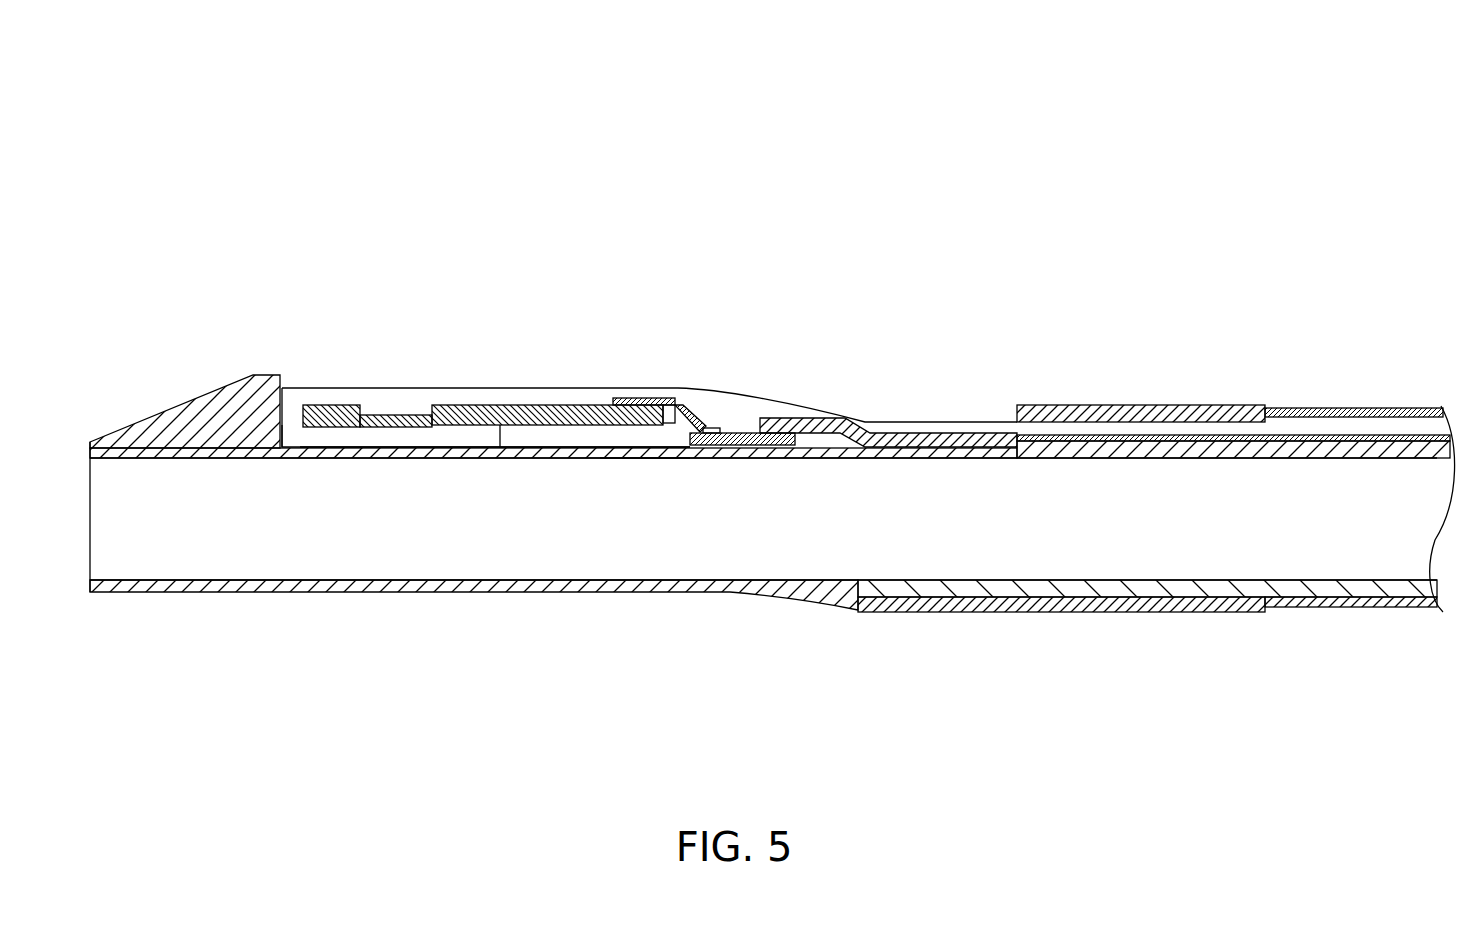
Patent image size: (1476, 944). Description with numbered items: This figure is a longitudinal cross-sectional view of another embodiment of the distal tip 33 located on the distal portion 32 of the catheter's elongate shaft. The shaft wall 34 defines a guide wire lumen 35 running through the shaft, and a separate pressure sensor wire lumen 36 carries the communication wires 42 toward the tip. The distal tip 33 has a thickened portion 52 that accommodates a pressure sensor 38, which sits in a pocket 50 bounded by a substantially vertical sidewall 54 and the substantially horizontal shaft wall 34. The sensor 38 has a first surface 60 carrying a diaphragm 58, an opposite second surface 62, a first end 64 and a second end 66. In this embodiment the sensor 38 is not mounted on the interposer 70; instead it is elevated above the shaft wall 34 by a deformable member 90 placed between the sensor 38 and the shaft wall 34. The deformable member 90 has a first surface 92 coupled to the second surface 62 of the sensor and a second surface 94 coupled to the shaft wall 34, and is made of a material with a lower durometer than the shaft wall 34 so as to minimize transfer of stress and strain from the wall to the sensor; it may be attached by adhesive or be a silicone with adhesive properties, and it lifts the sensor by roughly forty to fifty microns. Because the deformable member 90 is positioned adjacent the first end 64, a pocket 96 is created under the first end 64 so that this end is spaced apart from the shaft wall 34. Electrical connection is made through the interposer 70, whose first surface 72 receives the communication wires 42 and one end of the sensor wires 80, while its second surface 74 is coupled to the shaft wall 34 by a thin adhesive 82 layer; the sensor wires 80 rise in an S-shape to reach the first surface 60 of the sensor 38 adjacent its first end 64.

The distal portion 32 is at (1017, 733).
The distal tip 33 is at (385, 195).
The shaft wall 34 is at (402, 456).
The guide wire lumen 35 is at (923, 535).
The pressure sensor wire lumen 36 is at (1418, 408).
The pressure sensor 38 is at (502, 407).
The communication wires 42 is at (863, 437).
The pocket 50 is at (483, 392).
The thickened portion 52 is at (770, 408).
The sidewall 54 is at (288, 388).
The diaphragm 58 is at (397, 402).
The first surface 60 is at (530, 405).
The second surface 62 is at (336, 428).
The first end 64 is at (636, 408).
The second end 66 is at (337, 404).
The interposer 70 is at (723, 447).
The first surface 72 is at (758, 427).
The second surface 74 is at (783, 447).
The sensor wires 80 is at (662, 405).
The adhesive 82 is at (762, 447).
The deformable member 90 is at (578, 438).
The first surface 92 is at (673, 405).
The second surface 94 is at (636, 455).
The pocket 96 is at (432, 436).